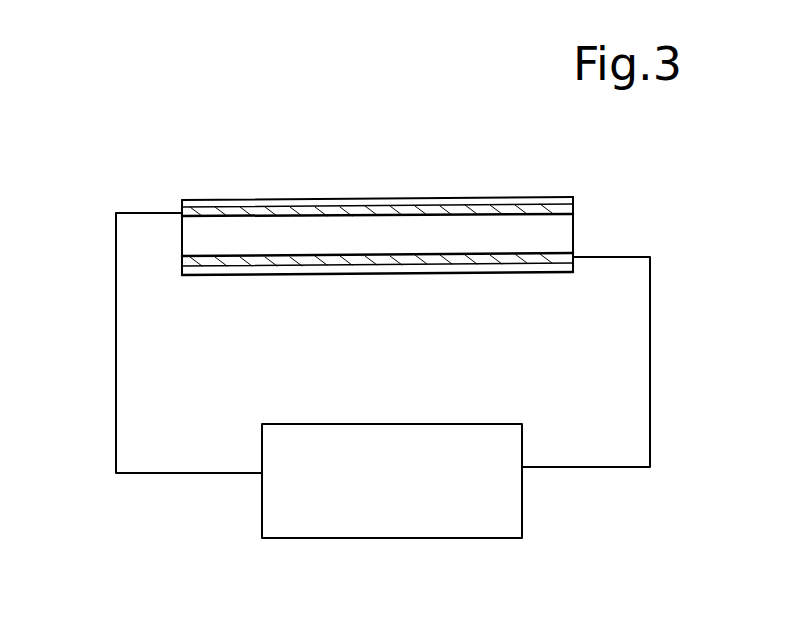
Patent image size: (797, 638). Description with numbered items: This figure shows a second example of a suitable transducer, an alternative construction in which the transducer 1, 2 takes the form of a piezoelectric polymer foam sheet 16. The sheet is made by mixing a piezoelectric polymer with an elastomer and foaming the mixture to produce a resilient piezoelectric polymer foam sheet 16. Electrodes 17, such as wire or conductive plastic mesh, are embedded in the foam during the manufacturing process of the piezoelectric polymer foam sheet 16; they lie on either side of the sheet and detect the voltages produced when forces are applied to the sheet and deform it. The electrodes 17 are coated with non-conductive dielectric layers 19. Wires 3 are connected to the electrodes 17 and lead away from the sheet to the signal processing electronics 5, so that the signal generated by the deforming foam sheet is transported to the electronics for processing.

The transducer 1 is at (383, 160).
The transducer 2 is at (361, 217).
The wires 3 is at (114, 407).
The signal processing electronics 5 is at (432, 541).
The piezoelectric polymer foam sheet 16 is at (576, 230).
The electrodes 17 is at (178, 209).
The non-conductive dielectric layers 19 is at (291, 199).